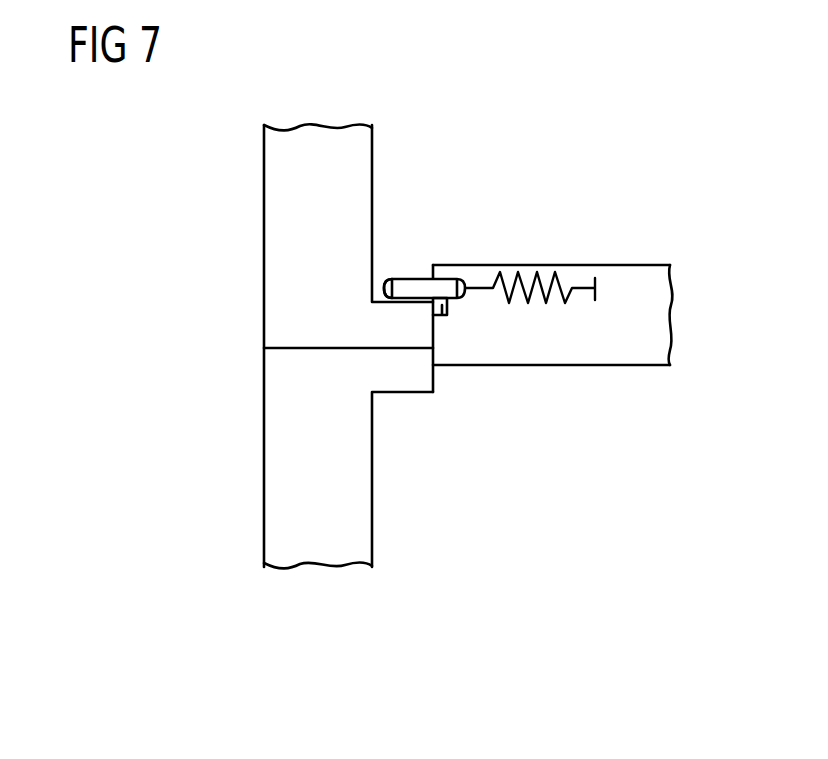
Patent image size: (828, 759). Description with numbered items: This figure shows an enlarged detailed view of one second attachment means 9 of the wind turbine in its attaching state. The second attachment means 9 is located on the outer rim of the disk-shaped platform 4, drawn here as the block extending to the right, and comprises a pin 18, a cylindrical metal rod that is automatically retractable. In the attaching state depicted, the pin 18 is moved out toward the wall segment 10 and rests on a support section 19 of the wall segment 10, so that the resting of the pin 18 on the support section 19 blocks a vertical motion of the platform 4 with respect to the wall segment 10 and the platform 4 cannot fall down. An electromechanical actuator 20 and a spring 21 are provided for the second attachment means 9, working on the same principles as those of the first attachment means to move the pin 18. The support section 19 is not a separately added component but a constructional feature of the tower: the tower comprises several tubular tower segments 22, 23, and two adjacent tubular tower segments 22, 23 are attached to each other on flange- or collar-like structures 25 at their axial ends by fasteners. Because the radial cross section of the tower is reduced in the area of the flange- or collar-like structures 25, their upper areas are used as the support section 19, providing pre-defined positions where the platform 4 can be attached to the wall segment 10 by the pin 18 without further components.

The platform 4 is at (641, 265).
The second attachment means 9 is at (476, 183).
The wall segment 10 is at (372, 492).
The pin 18 is at (418, 290).
The support section 19 is at (384, 297).
The electromechanical actuator 20 is at (438, 318).
The spring 21 is at (550, 278).
The tubular tower segment 22 is at (284, 188).
The tubular tower segment 23 is at (283, 492).
The flange- or collar-like structure 25 is at (395, 330).